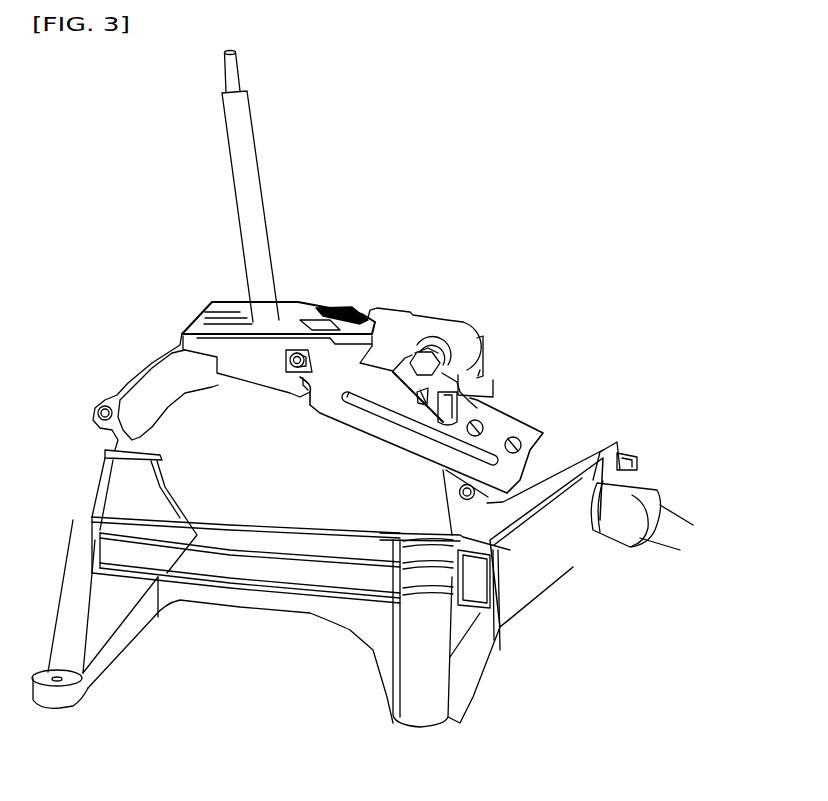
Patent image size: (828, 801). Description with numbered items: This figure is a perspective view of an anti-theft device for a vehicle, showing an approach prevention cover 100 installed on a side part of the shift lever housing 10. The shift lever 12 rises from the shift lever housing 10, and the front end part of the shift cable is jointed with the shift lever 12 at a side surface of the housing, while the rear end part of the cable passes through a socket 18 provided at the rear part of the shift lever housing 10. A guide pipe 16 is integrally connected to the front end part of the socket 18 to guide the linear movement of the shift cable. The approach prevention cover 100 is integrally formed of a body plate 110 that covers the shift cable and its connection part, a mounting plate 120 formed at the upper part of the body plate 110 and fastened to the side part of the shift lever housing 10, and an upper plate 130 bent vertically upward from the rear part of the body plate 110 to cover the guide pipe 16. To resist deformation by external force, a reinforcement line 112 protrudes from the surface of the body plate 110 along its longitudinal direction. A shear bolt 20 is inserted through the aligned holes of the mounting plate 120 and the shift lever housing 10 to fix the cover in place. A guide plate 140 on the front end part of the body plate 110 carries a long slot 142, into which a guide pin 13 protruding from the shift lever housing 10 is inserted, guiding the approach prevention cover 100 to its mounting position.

The shift lever housing 10 is at (339, 302).
The shift lever 12 is at (248, 262).
The guide pin 13 is at (288, 366).
The guide pipe 16 is at (540, 463).
The socket 18 is at (623, 503).
The shear bolt 20 is at (426, 346).
The approach prevention cover 100 is at (463, 450).
The body plate 110 is at (390, 432).
The reinforcement line 112 is at (420, 448).
The mounting plate 120 is at (441, 376).
The upper plate 130 is at (507, 423).
The guide plate 140 is at (293, 307).
The slot 142 is at (292, 348).